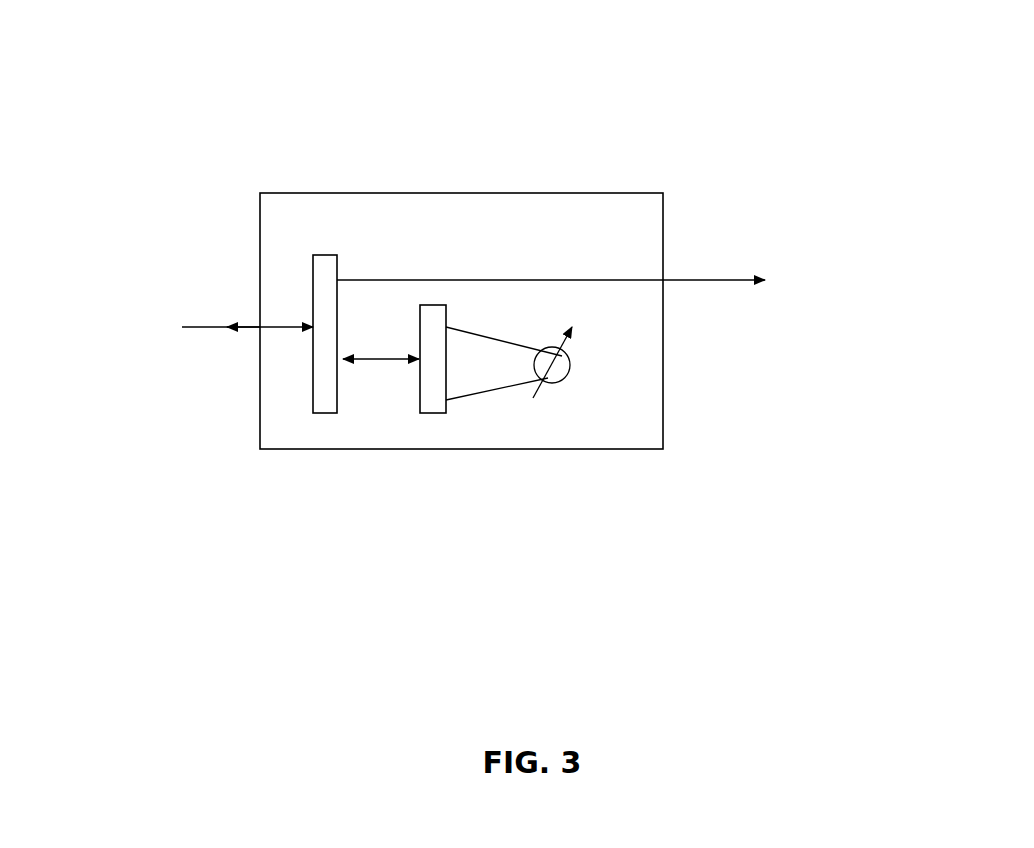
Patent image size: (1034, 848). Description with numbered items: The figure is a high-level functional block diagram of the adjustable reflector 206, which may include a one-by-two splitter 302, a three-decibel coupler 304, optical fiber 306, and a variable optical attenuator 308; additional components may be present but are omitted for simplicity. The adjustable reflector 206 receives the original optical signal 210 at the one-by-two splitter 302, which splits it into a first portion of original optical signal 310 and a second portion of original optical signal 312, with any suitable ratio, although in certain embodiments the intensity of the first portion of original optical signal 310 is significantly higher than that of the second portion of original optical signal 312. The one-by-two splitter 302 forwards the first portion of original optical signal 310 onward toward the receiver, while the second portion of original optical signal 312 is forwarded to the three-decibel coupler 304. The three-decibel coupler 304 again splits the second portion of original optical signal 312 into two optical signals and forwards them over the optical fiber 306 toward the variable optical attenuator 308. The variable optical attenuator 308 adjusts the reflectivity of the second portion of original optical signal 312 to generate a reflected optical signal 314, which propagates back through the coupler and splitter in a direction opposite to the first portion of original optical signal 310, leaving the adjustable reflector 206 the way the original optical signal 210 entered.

The adjustable reflector 206 is at (57, 44).
The original optical signal 210 is at (179, 328).
The 1×2 splitter 302 is at (313, 297).
The 3 dB coupler 304 is at (433, 305).
The optical fiber 306 is at (523, 338).
The variable optical attenuator 308 is at (567, 382).
The first portion of original optical signal 310 is at (667, 274).
The second portion of original optical signal 312 is at (404, 368).
The reflected optical signal 314 is at (228, 333).